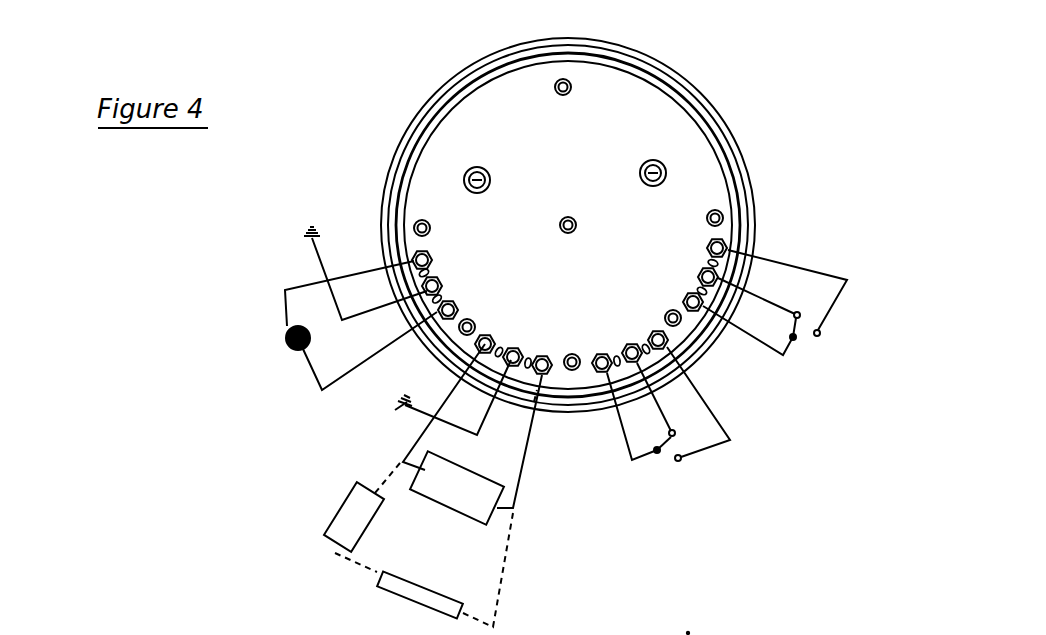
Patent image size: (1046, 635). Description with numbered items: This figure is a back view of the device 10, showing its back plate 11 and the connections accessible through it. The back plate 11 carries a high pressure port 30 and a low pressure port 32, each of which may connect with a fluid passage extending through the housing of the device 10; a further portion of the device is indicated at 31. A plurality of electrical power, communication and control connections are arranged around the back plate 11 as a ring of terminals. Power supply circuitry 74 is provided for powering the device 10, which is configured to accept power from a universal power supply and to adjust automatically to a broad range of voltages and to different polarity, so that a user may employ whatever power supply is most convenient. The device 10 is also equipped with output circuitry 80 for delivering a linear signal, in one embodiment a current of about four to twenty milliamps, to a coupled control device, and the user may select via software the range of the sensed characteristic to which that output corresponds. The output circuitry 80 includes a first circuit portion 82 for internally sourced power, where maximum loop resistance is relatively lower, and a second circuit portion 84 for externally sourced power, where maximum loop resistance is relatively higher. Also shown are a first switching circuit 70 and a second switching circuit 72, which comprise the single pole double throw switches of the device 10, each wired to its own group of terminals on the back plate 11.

The device 10 is at (806, 158).
The back plate 11 is at (435, 168).
The high pressure port 30 is at (653, 186).
The housing 31 is at (690, 633).
The low pressure port 32 is at (485, 190).
The first switching circuit 70 is at (695, 463).
The second switching circuit 72 is at (790, 358).
The power supply circuitry 74 is at (280, 315).
The output circuitry 80 is at (317, 560).
The first circuit portion 82 is at (530, 478).
The second circuit portion 84 is at (512, 573).